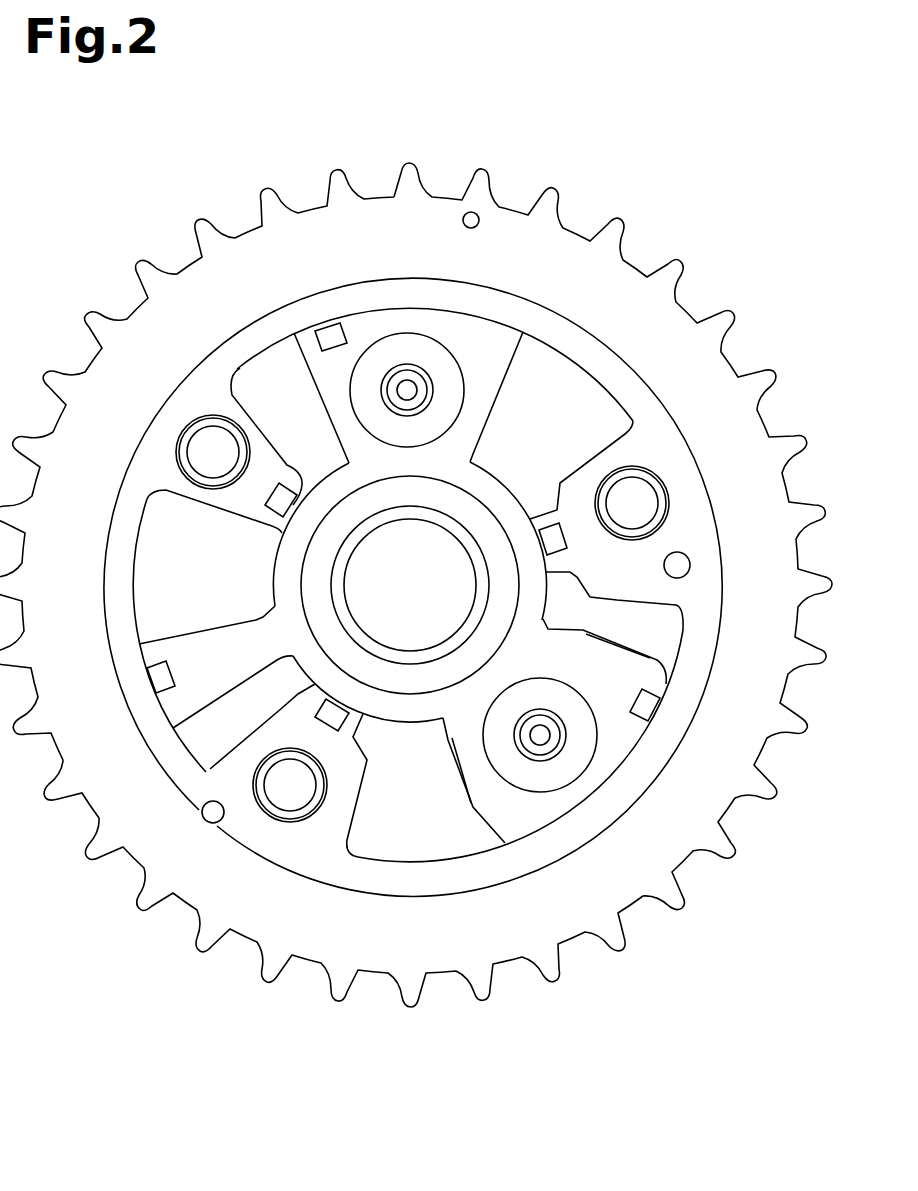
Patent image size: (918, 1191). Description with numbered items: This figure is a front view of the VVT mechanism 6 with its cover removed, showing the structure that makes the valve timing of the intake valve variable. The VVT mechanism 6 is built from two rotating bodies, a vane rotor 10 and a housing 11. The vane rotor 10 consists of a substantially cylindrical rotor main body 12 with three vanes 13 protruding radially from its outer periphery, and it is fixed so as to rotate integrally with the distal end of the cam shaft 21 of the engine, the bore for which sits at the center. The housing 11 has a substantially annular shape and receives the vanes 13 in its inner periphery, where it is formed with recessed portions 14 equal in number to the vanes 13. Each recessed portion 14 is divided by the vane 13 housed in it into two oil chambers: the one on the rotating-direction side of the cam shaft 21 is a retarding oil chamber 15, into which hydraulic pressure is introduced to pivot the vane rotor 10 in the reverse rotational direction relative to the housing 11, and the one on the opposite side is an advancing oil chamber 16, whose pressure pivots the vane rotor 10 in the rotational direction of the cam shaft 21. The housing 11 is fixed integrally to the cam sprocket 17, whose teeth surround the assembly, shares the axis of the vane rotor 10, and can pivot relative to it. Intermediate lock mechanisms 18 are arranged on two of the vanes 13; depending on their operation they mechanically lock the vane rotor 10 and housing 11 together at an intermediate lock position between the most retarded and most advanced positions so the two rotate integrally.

The VVT mechanism 6 is at (100, 265).
The vane rotor 10 is at (270, 578).
The housing 11 is at (707, 568).
The rotor main body 12 is at (490, 488).
The vanes 13 is at (486, 372).
The recessed portions 14 is at (140, 522).
The retarding oil chamber 15 is at (518, 444).
The advancing oil chamber 16 is at (278, 427).
The cam sprocket 17 is at (766, 742).
The intermediate lock mechanisms 18 is at (390, 422).
The cam shaft 21 is at (447, 615).